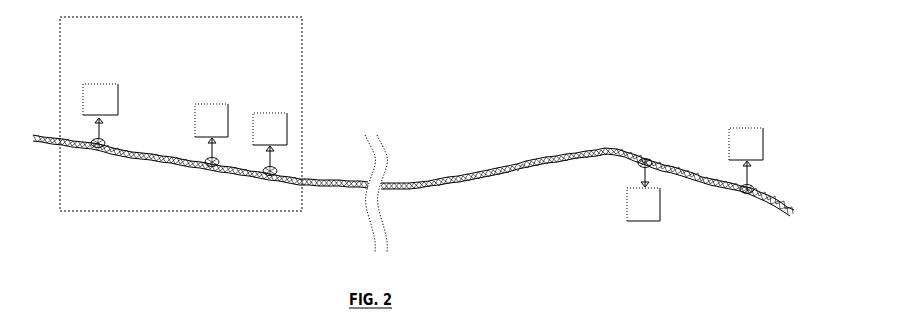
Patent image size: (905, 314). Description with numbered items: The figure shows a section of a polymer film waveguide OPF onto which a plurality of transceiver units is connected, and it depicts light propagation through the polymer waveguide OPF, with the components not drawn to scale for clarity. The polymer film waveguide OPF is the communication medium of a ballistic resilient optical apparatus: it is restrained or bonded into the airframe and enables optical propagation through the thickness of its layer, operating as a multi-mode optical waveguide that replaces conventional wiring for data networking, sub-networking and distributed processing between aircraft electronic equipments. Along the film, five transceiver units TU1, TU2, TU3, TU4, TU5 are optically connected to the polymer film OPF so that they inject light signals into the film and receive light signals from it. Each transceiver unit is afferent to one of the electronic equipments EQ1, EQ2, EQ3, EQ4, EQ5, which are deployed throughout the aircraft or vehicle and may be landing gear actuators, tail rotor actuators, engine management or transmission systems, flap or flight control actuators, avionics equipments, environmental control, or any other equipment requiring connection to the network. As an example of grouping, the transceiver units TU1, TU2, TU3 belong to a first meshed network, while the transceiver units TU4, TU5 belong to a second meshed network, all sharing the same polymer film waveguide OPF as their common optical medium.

The polymer film waveguide OPF is at (490, 190).
The electronic equipment EQ1 is at (98, 84).
The electronic equipment EQ2 is at (210, 103).
The electronic equipment EQ3 is at (287, 128).
The electronic equipment EQ4 is at (645, 222).
The electronic equipment EQ5 is at (747, 128).
The transceiver unit TU1 is at (90, 139).
The transceiver unit TU2 is at (206, 161).
The transceiver unit TU3 is at (280, 171).
The transceiver unit TU4 is at (637, 165).
The transceiver unit TU5 is at (755, 187).